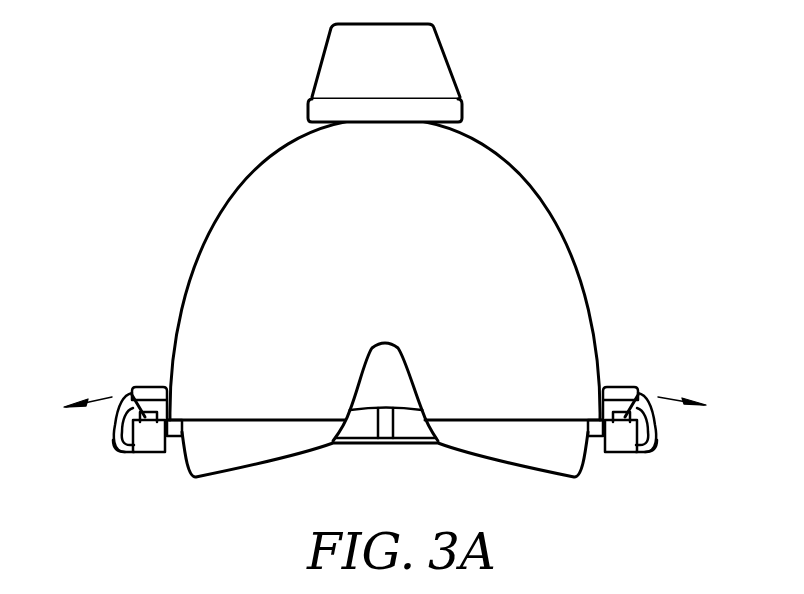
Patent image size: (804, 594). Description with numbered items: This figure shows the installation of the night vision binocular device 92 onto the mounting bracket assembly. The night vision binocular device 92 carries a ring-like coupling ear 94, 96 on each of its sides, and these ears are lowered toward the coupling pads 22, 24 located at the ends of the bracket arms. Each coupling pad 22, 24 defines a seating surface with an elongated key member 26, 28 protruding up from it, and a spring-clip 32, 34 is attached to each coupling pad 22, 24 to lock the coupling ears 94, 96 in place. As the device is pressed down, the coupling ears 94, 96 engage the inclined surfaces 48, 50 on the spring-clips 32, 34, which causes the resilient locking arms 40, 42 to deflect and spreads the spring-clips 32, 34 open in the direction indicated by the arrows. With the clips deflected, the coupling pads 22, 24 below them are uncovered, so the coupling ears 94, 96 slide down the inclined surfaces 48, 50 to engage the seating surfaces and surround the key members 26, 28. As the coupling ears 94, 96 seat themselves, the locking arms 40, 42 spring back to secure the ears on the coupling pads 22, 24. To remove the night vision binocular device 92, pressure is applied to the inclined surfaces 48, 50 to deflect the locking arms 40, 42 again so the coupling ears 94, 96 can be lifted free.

The night vision binocular device 92 is at (545, 193).
The coupling ear 94 is at (134, 386).
The coupling ear 96 is at (623, 388).
The inclined surface 50 is at (125, 398).
The inclined surface 48 is at (647, 398).
The resilient locking arm 42 is at (113, 430).
The resilient locking arm 40 is at (657, 428).
The spring-clip 34 is at (113, 450).
The spring-clip 32 is at (660, 452).
The key member 28 is at (148, 440).
The key member 26 is at (622, 442).
The coupling pad 24 is at (158, 445).
The coupling pad 22 is at (611, 447).